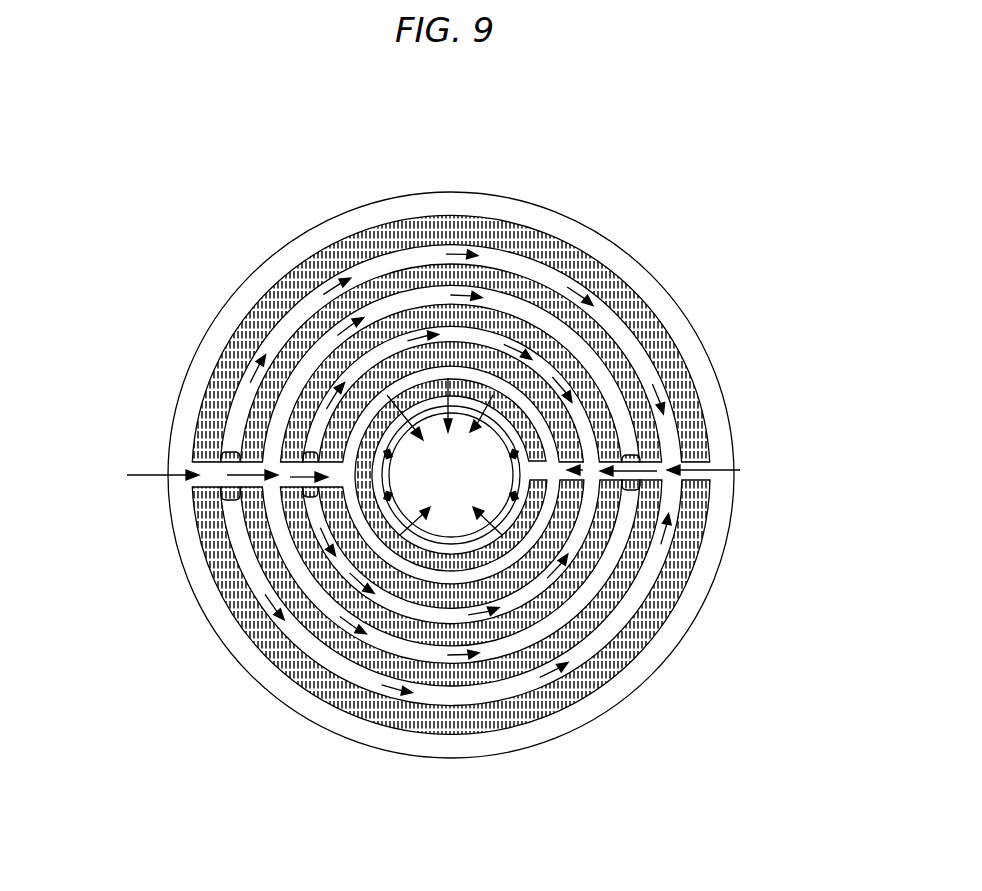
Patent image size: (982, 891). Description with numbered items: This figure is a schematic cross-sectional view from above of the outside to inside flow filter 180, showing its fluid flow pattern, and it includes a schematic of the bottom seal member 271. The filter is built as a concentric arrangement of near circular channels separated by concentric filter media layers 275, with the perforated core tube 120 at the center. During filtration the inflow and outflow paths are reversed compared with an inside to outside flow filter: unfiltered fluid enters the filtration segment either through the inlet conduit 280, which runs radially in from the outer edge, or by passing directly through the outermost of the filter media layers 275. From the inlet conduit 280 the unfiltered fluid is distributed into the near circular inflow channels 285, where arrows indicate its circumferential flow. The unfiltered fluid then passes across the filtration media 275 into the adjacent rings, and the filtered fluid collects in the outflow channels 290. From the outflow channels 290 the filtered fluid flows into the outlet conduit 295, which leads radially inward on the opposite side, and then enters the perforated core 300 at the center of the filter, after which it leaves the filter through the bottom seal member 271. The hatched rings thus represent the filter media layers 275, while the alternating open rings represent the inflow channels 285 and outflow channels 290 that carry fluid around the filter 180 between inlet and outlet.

The outside to inside flow filter 180 is at (484, 168).
The bottom seal member 271 is at (333, 217).
The filter media layers 275 is at (522, 413).
The inlet conduit 280 is at (192, 487).
The inflow channels 285 is at (347, 513).
The outflow channels 290 is at (507, 520).
The outlet conduit 295 is at (687, 460).
The perforated core 300 is at (447, 537).
The perforated core tube 120 is at (513, 475).